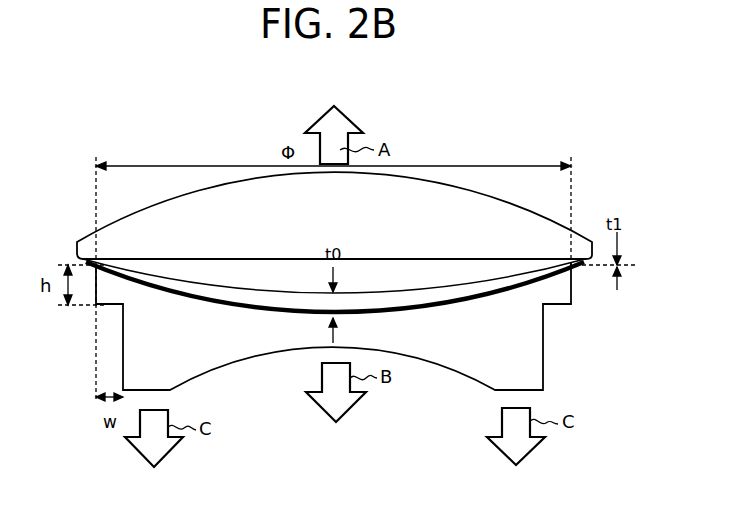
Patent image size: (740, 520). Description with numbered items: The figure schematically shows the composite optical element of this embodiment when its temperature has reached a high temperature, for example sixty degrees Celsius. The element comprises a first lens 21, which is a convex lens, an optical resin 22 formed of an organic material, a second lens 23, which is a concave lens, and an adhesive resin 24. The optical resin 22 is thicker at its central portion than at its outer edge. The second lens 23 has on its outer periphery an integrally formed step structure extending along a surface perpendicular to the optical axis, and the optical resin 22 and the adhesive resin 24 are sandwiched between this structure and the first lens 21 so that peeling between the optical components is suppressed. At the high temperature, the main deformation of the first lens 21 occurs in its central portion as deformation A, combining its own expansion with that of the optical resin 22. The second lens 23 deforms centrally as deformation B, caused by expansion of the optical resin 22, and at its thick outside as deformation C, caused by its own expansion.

The first lens 21 is at (577, 226).
The optical resin 22 is at (468, 284).
The second lens 23 is at (454, 346).
The adhesive resin 24 is at (247, 300).